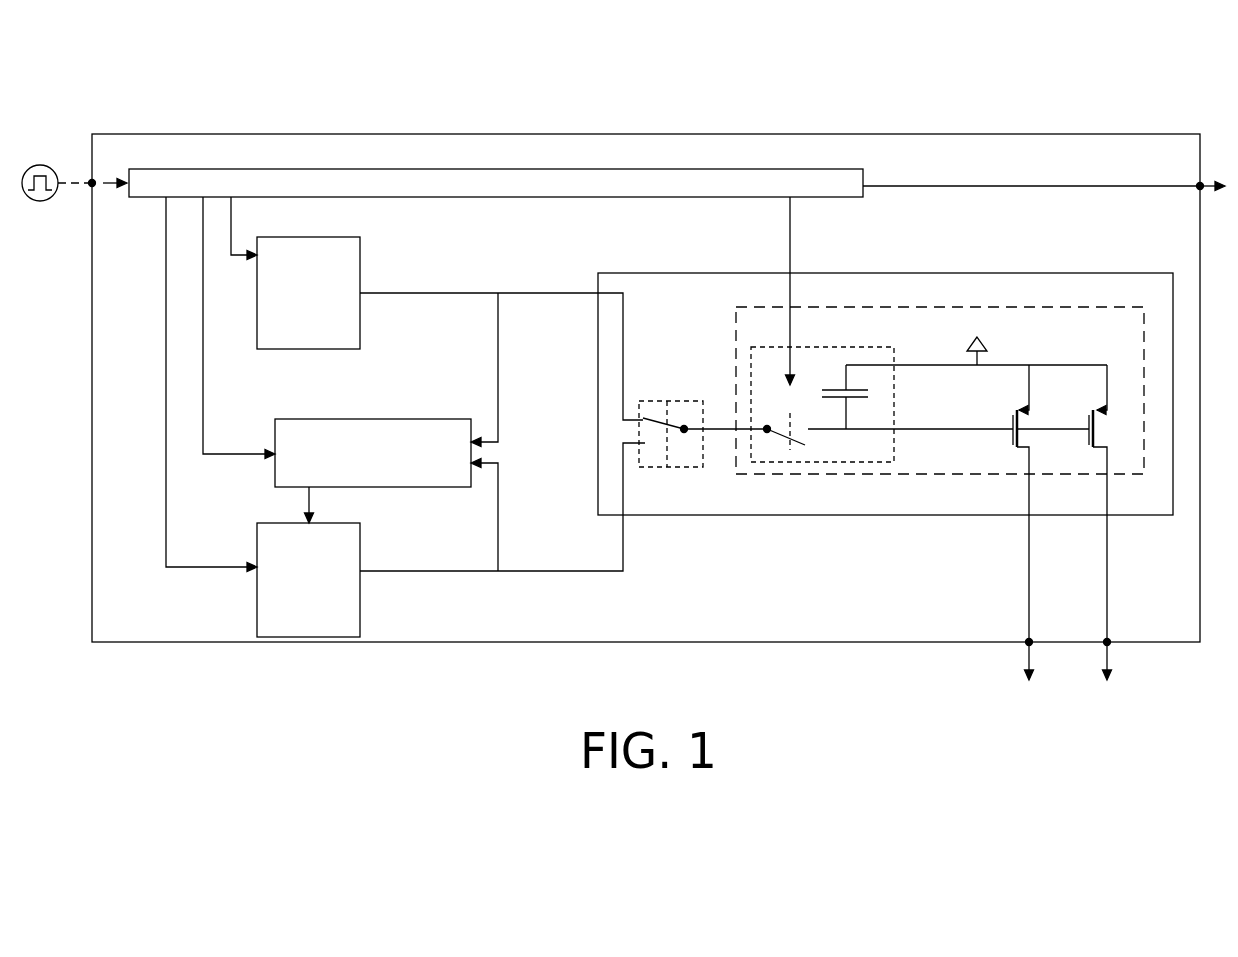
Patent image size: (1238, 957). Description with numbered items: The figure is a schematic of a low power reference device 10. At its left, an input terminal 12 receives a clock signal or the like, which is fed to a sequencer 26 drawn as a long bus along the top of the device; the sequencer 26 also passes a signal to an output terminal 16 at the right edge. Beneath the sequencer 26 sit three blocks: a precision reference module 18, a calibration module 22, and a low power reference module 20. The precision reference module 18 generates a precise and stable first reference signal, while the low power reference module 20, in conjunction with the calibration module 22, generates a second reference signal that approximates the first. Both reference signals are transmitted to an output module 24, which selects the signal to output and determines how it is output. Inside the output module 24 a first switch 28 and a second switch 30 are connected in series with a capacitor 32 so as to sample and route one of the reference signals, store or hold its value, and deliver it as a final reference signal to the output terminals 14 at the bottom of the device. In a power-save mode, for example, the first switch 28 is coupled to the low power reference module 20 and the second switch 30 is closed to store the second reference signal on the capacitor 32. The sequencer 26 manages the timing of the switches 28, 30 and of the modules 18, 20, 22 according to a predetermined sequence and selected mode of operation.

The low power reference device 10 is at (757, 147).
The input terminal 12 is at (92, 183).
The output terminals 14 is at (1103, 640).
The output terminal 16 is at (1200, 186).
The precision reference module 18 is at (358, 258).
The low power reference module 20 is at (352, 552).
The calibration module 22 is at (327, 434).
The output module 24 is at (885, 273).
The sequencer 26 is at (464, 182).
The first switch 28 is at (658, 401).
The second switch 30 is at (775, 447).
The capacitor 32 is at (873, 360).